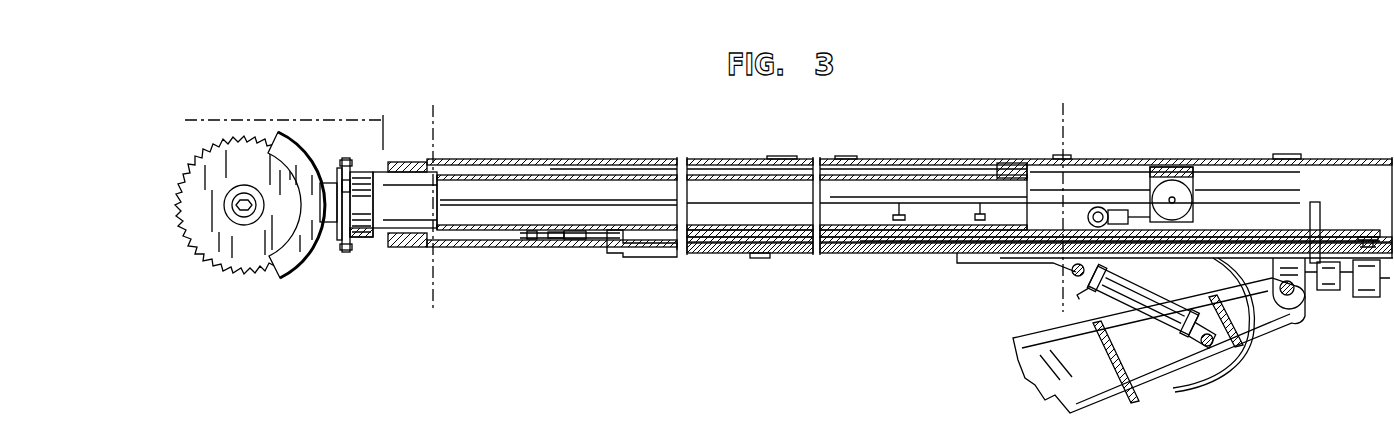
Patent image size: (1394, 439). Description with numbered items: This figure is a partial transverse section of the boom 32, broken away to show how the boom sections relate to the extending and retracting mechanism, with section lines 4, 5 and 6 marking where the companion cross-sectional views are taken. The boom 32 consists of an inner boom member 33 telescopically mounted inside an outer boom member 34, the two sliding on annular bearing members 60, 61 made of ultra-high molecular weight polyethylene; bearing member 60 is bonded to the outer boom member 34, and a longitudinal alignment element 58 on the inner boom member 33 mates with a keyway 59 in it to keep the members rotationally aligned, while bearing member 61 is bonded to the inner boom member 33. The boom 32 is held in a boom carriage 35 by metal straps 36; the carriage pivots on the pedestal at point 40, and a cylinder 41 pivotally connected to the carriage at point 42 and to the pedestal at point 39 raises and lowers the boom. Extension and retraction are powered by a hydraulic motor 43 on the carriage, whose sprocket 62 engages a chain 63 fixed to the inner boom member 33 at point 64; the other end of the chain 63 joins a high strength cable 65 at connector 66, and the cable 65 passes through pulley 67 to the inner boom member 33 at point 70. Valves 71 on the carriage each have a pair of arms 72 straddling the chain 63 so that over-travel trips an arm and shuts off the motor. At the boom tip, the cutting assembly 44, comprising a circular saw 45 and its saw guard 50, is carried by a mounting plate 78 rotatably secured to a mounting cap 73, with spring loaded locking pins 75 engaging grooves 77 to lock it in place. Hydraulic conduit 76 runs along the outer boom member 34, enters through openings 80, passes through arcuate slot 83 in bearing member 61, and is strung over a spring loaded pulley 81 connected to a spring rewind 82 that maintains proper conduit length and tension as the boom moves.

The section line 4- 4 is at (185, 121).
The section line 5- 5 is at (1063, 107).
The section line 6- 6 is at (436, 113).
The boom 32 is at (743, 132).
The inner boom member 33 is at (613, 178).
The outer boom member 34 is at (572, 160).
The boom carriage 35 is at (887, 255).
The metal straps 36 is at (841, 156).
The point 39 is at (1213, 346).
The point 40 is at (1293, 294).
The cylinder 41 is at (1152, 312).
The point 42 is at (1070, 271).
The hydraulic motor 43 is at (1368, 296).
The cutting assembly 44 is at (286, 284).
The circular saw 45 is at (226, 268).
The saw guard 50 is at (302, 252).
The longitudinal alignment element 58 is at (500, 169).
The keyway 59 is at (438, 185).
The annular bearing member 60 is at (396, 165).
The annular bearing member 61 is at (1012, 163).
The sprocket 62 is at (1368, 237).
The chain 63 is at (1255, 232).
The point 64 is at (980, 214).
The cable 65 is at (559, 242).
The connector 66 is at (567, 243).
The pulley 67 is at (537, 240).
The point 70 is at (902, 199).
The valves 71 is at (1328, 290).
The arms 72 is at (1318, 210).
The mounting cap 73 is at (368, 238).
The spring loaded locking pins 75 is at (345, 160).
The hydraulic conduit 76 is at (931, 196).
The grooves 77 is at (362, 206).
The mounting plate 78 is at (349, 185).
The openings 80 is at (612, 240).
The spring loaded pulley 81 is at (1105, 208).
The spring rewind 82 is at (1194, 200).
The arcuate slot 83 is at (1000, 241).